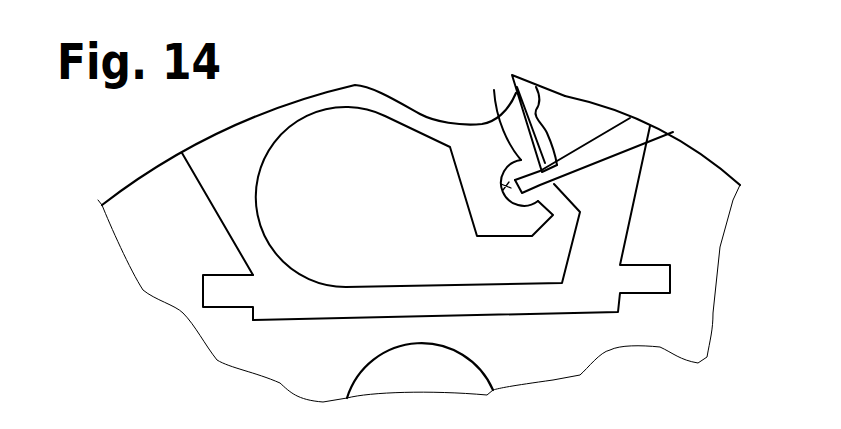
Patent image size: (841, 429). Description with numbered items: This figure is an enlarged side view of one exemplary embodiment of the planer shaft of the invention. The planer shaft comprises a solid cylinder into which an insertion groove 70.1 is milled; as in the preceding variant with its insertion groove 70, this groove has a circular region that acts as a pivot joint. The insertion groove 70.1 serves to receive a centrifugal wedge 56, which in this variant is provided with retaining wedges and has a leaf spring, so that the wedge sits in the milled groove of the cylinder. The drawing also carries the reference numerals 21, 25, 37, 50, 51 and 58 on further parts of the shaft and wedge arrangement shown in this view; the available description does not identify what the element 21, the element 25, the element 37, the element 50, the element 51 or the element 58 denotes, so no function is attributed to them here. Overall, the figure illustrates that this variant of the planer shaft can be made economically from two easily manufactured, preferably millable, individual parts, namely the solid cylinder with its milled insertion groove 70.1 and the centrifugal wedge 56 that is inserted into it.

The blade 21 is at (527, 93).
The housing wall 25 is at (436, 121).
The blade edge 37 is at (540, 125).
The upper guide strip 50 is at (630, 118).
The lower guide strip 51 is at (673, 132).
The centrifugal wedge 56 is at (468, 164).
The slot 58 is at (494, 90).
The insertion groove 70 is at (211, 296).
The insertion groove 70.1 is at (583, 309).